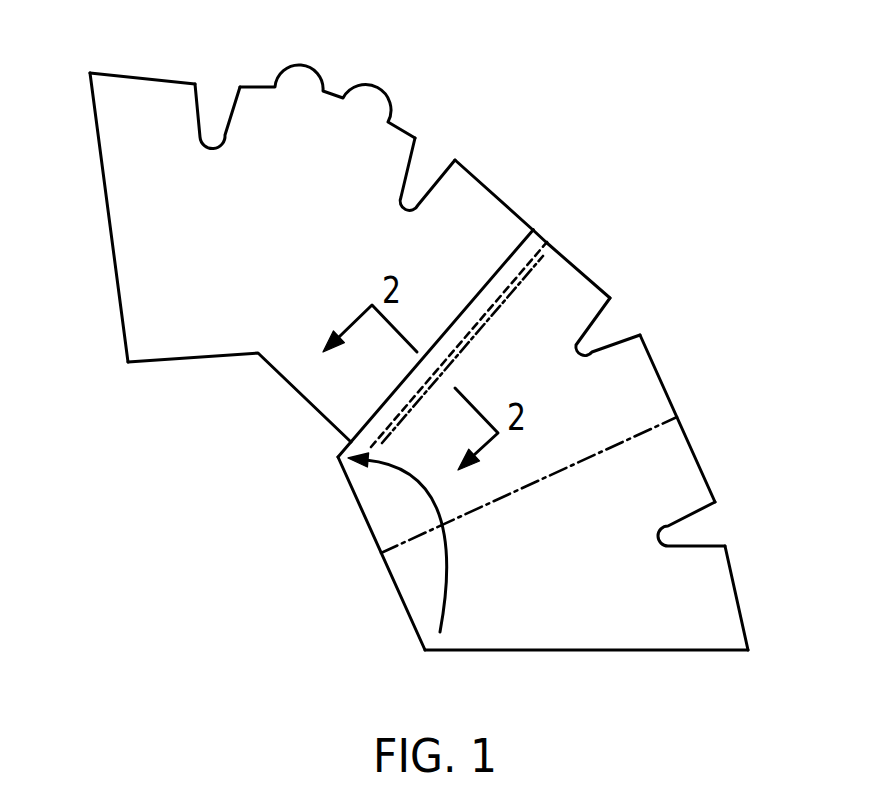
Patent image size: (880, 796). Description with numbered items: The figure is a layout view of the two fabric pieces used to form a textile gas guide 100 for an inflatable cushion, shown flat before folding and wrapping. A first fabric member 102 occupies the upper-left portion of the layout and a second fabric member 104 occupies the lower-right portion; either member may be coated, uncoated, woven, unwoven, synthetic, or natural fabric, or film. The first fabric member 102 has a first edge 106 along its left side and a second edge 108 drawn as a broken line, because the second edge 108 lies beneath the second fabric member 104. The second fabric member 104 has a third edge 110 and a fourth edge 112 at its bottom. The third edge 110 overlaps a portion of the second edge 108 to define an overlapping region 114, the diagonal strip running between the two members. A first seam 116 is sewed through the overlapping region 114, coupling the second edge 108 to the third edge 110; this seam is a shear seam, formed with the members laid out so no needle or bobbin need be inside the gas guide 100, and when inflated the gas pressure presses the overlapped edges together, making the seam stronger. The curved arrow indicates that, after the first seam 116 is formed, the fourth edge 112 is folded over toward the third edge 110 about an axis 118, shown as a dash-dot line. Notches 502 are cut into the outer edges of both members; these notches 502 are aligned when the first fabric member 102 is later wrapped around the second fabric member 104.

The textile gas guide 100 is at (424, 369).
The first fabric member 102 is at (332, 240).
The second fabric member 104 is at (577, 538).
The first edge 106 is at (126, 345).
The second edge 108 is at (543, 258).
The third edge 110 is at (338, 450).
The fourth edge 112 is at (565, 652).
The overlapping region 114 is at (557, 243).
The first seam 116 is at (525, 262).
The axis 118 is at (645, 427).
The notches 502 is at (213, 97).